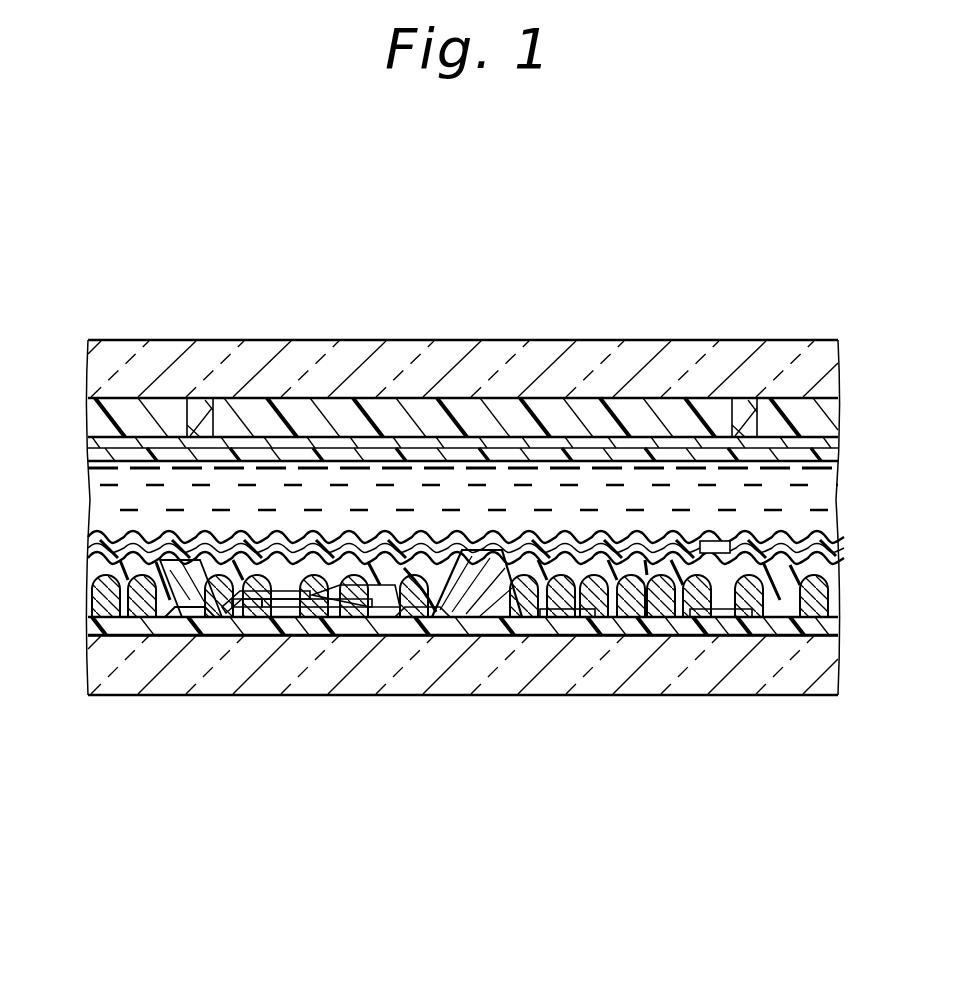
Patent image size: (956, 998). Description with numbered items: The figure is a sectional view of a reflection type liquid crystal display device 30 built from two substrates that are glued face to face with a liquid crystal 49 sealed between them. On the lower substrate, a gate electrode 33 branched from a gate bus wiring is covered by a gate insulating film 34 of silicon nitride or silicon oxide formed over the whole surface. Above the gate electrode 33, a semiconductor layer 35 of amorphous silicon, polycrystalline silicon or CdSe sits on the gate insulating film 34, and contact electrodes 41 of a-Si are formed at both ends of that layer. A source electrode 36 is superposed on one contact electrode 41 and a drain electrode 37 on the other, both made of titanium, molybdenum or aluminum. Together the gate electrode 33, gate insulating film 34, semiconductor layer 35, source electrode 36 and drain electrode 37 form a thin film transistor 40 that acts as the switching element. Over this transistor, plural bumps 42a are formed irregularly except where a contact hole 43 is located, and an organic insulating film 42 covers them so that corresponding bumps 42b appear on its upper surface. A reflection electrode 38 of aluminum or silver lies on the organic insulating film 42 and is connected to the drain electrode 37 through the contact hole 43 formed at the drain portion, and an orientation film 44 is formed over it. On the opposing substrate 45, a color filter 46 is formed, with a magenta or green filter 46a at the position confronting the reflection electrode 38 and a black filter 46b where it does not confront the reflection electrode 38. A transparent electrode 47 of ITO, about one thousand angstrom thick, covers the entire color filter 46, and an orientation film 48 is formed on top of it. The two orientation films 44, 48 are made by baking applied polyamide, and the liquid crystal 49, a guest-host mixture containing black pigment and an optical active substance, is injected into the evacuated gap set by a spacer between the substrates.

The reflection type liquid crystal display device 30 is at (752, 243).
The substrate 45 is at (146, 352).
The color filter 46 is at (463, 323).
The magenta or green filter 46a is at (165, 408).
The black filter 46b is at (205, 420).
The transparent electrode 47 is at (96, 441).
The orientation film 48 is at (98, 461).
The liquid crystal 49 is at (100, 518).
The orientation film 44 is at (100, 545).
The reflection electrode 38 is at (100, 578).
The organic insulating film 42 is at (96, 622).
The bumps 42a is at (582, 615).
The bumps 42b is at (712, 553).
The contact hole 43 is at (473, 632).
The thin film transistor 40 is at (305, 709).
The gate electrode 33 is at (315, 632).
The gate insulating film 34 is at (277, 632).
The semiconductor layer 35 is at (375, 632).
The source electrode 36 is at (195, 632).
The drain electrode 37 is at (422, 682).
The contact electrodes 41 is at (270, 632).